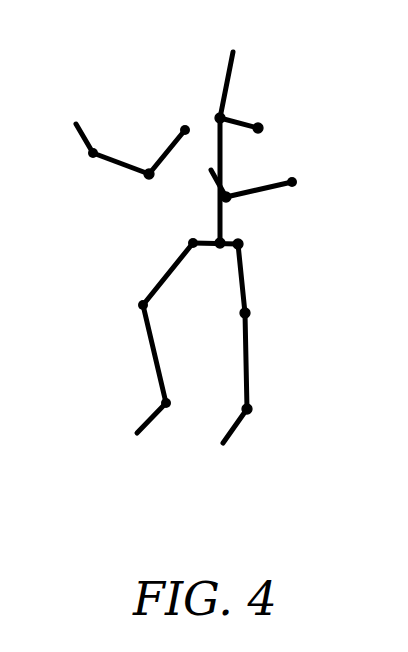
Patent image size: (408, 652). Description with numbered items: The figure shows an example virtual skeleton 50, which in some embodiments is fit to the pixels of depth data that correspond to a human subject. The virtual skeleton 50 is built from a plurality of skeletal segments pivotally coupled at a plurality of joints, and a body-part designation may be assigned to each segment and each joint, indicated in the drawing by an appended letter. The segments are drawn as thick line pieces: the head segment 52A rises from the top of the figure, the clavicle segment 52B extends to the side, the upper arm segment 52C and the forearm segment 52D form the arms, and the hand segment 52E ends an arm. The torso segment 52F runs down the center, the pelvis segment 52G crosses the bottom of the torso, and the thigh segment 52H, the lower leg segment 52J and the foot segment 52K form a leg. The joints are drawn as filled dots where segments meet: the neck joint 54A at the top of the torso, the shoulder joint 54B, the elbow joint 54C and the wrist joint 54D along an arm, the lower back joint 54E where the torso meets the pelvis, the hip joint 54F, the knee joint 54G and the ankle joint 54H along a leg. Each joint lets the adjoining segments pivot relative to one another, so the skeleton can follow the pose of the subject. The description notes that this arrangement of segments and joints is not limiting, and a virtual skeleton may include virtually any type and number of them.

The virtual skeleton 50 is at (335, 426).
The head skeletal segment 52A is at (235, 62).
The clavicle skeletal segment 52B is at (239, 120).
The upper arm skeletal segment 52C is at (172, 143).
The forearm skeletal segment 52D is at (267, 190).
The hand skeletal segment 52E is at (79, 133).
The torso skeletal segment 52F is at (218, 208).
The pelvis skeletal segment 52G is at (204, 246).
The thigh skeletal segment 52H is at (168, 272).
The lower leg skeletal segment 52J is at (248, 363).
The foot skeletal segment 52K is at (147, 425).
The neck joint 54A is at (215, 117).
The shoulder joint 54B is at (263, 128).
The elbow joint 54C is at (146, 177).
The wrist joint 54D is at (238, 192).
The lower back joint 54E is at (223, 241).
The hip joint 54F is at (241, 248).
The knee joint 54G is at (249, 313).
The ankle joint 54H is at (243, 410).